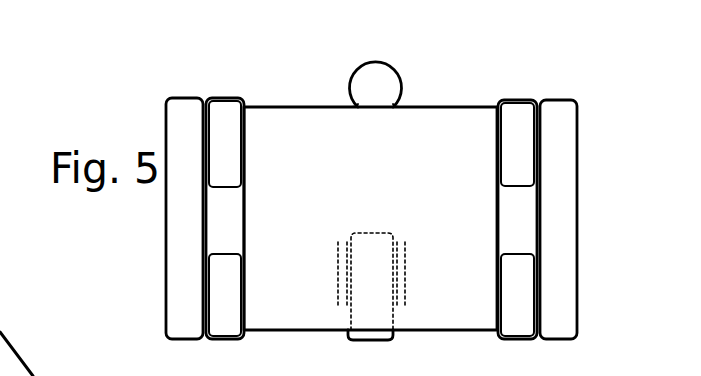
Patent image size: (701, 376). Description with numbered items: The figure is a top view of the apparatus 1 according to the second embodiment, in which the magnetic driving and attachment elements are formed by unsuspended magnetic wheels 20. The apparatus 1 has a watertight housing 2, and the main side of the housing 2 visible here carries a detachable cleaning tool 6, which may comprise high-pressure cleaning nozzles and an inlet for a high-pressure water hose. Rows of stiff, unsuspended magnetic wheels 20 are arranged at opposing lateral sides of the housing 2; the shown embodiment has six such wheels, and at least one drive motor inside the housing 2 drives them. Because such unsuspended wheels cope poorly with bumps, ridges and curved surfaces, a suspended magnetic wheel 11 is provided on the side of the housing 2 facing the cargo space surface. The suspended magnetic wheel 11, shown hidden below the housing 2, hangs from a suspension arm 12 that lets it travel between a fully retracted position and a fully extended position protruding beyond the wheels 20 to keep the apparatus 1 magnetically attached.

The apparatus 1 is at (108, 243).
The watertight housing 2 is at (328, 123).
The cleaning tool 6 is at (373, 63).
The unsuspended magnetic wheels 20 is at (228, 110).
The suspended magnetic wheel 11 is at (368, 338).
The suspension arm 12 is at (337, 270).